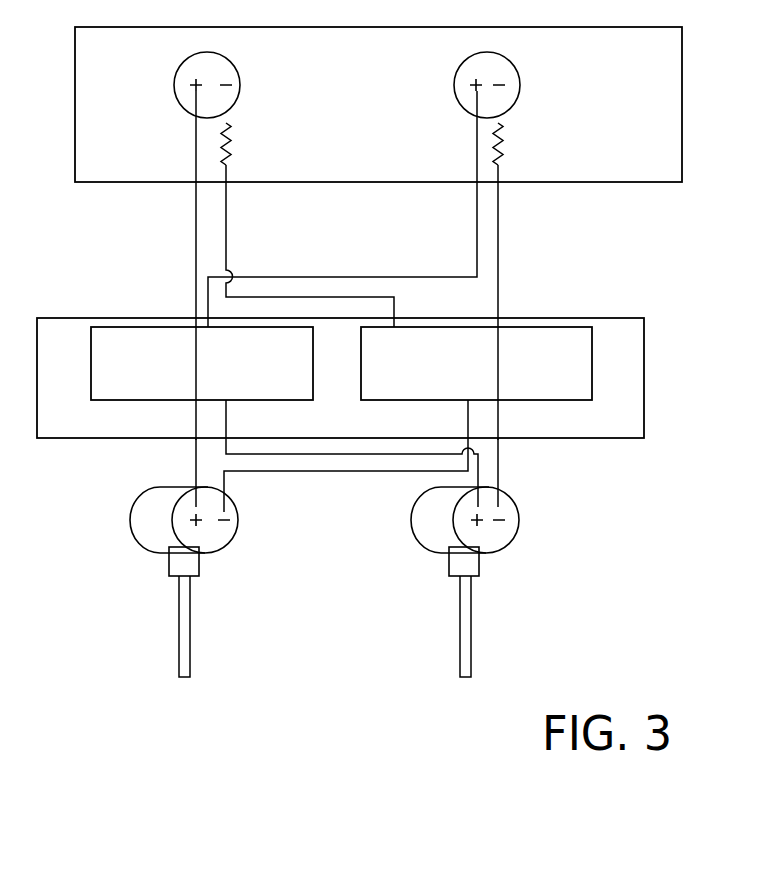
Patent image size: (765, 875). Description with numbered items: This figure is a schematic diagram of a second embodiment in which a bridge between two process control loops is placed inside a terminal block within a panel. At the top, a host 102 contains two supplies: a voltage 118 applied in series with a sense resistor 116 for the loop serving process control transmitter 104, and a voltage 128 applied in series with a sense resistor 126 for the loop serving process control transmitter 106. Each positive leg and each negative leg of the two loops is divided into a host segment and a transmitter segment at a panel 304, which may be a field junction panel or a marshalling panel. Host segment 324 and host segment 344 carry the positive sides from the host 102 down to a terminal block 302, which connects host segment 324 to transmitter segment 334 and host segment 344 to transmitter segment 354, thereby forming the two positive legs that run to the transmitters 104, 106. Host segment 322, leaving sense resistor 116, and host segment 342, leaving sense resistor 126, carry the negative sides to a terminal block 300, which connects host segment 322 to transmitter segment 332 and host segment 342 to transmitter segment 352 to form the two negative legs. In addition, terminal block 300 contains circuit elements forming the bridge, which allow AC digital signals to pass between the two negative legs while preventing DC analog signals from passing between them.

The host 102 is at (665, 171).
The process control transmitter 104 is at (208, 553).
The process control transmitter 106 is at (490, 553).
The sense resistor 116 is at (232, 140).
The voltage 118 is at (228, 56).
The sense resistor 126 is at (504, 127).
The voltage 128 is at (508, 56).
The terminal block 300 is at (581, 387).
The terminal block 302 is at (181, 387).
The panel 304 is at (633, 431).
The host segment 322 is at (226, 242).
The host segment 324 is at (196, 229).
The transmitter segment 332 is at (226, 488).
The transmitter segment 334 is at (196, 478).
The host segment 342 is at (498, 243).
The host segment 344 is at (477, 208).
The transmitter segment 352 is at (498, 468).
The transmitter segment 354 is at (477, 481).